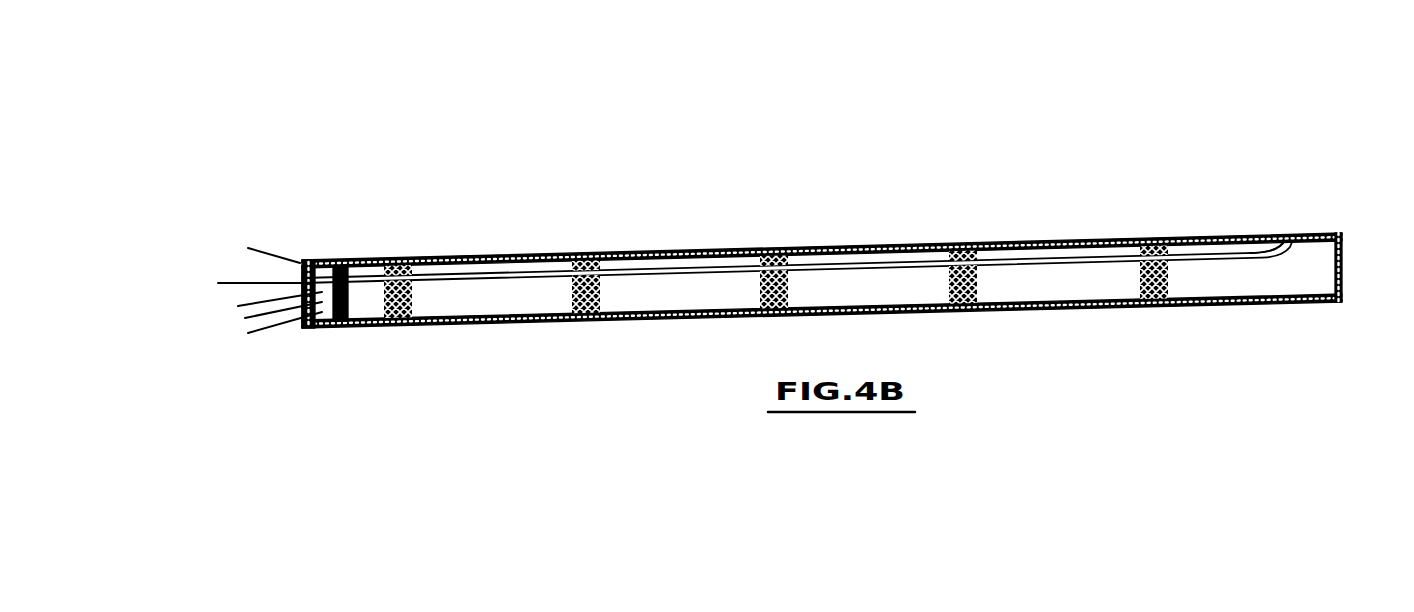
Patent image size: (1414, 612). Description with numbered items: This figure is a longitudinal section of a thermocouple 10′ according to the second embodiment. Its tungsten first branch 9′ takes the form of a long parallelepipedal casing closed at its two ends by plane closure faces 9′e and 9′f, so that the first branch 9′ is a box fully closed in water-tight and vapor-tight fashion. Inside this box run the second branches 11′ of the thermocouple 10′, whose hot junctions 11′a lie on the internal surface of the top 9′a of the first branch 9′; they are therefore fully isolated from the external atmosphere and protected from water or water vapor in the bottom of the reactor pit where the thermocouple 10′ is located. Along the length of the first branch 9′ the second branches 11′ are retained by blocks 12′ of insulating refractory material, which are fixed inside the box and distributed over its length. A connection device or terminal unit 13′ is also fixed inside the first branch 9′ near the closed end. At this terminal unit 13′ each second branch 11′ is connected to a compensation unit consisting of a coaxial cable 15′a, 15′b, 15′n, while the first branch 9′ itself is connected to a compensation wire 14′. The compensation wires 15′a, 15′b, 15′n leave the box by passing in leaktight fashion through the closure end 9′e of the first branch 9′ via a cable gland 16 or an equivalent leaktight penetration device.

The thermocouple 10′ is at (922, 183).
The first branch 9′ is at (660, 250).
The top of the first branch 9′a is at (1067, 238).
The closure face 9′e is at (312, 329).
The closure face 9′f is at (1347, 267).
The second branches 11′ is at (840, 265).
The hot junctions 11′a is at (1280, 233).
The blocks of insulating refractory material 12′ is at (940, 303).
The terminal unit 13′ is at (365, 329).
The compensation wire 14′ is at (270, 253).
The coaxial cable 15′a is at (235, 284).
The coaxial cable 15′b is at (240, 306).
The coaxial cable 15′n is at (265, 333).
The cable gland 16 is at (293, 275).